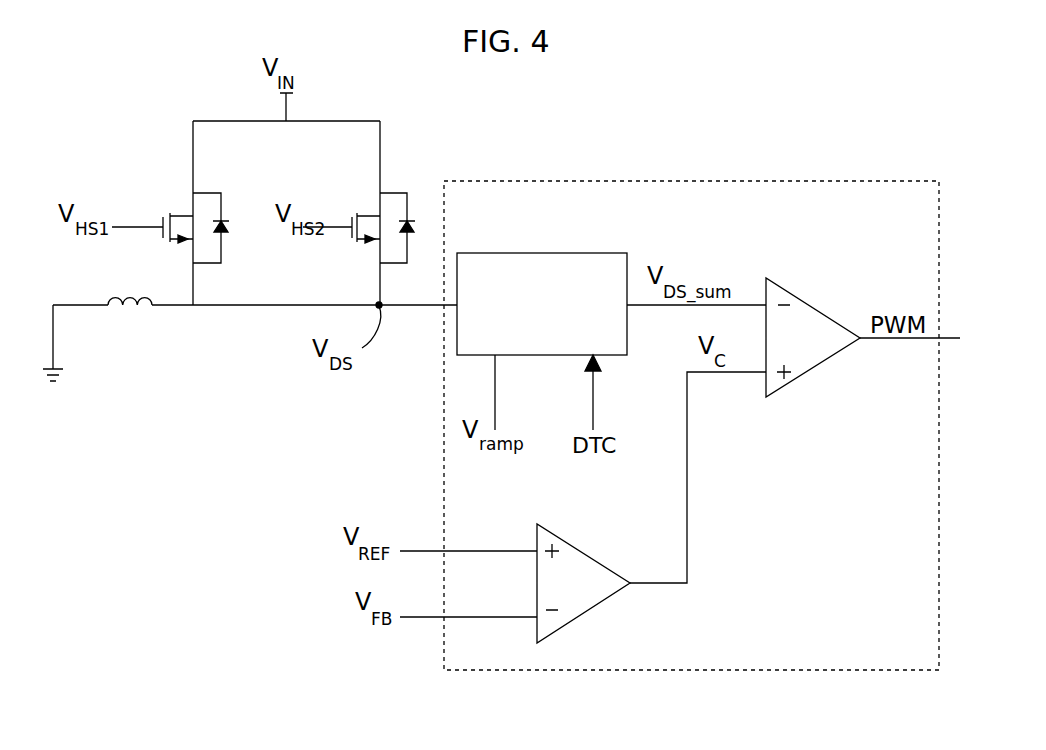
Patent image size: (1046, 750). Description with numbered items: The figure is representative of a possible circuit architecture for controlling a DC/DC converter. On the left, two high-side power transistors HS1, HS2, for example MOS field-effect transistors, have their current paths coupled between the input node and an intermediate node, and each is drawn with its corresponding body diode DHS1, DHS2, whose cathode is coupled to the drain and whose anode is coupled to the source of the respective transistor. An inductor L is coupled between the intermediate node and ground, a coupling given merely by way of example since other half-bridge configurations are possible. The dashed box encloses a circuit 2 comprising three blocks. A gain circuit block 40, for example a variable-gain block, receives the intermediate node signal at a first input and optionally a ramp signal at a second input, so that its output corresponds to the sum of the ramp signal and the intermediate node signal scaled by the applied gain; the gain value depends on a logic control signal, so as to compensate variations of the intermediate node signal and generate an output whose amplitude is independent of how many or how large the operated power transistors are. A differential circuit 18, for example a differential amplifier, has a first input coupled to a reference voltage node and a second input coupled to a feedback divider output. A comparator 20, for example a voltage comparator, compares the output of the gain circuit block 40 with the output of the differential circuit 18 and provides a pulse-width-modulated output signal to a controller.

The circuit 2 is at (735, 197).
The gain circuit block 40 is at (530, 258).
The comparator 20 is at (827, 350).
The differential circuit 18 is at (592, 565).
The power transistor HS1 is at (183, 214).
The power transistor HS2 is at (370, 214).
The body diode DHS1 is at (230, 234).
The body diode DHS2 is at (418, 232).
The inductor L is at (118, 308).